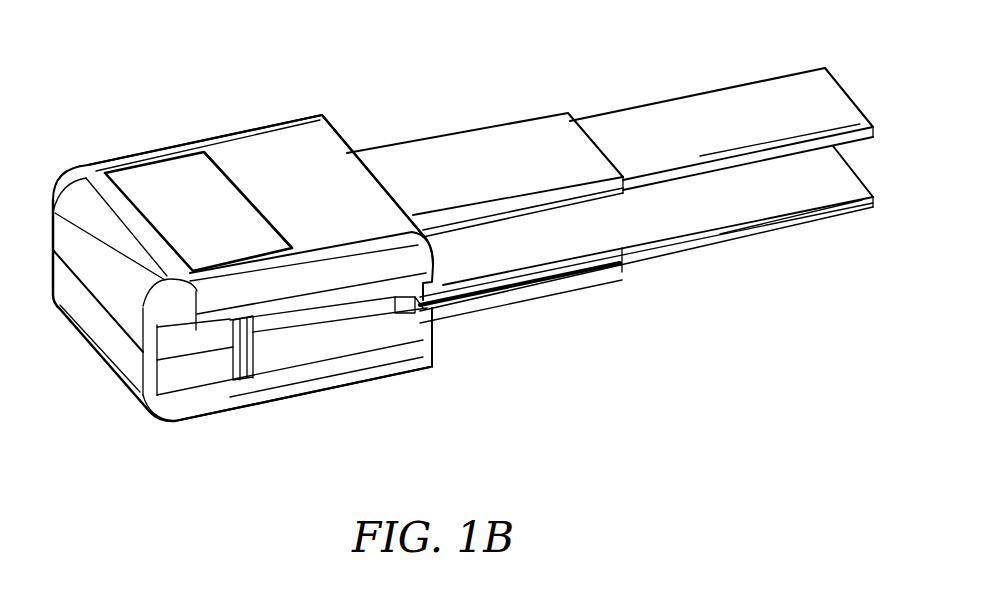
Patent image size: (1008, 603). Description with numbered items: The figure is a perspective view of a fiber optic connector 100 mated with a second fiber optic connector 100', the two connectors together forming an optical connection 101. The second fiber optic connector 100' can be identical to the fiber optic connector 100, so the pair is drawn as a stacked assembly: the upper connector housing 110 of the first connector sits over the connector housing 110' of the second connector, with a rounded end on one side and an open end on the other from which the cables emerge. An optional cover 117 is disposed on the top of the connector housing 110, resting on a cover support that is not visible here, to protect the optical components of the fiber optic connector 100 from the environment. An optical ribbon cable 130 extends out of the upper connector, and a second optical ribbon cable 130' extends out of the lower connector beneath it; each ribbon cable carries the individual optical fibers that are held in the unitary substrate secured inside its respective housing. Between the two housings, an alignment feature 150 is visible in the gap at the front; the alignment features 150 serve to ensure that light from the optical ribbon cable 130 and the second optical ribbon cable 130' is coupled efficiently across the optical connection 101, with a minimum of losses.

The optical connection 101 is at (138, 50).
The fiber optic connector 100 is at (243, 233).
The second fiber optic connector 100' is at (294, 386).
The connector housing 110 is at (257, 157).
The connector housing of the second fiber optic connector 110' is at (323, 394).
The cover 117 is at (178, 172).
The optical ribbon cable 130 is at (610, 137).
The second optical ribbon cable 130' is at (646, 234).
The alignment feature 150 is at (243, 377).